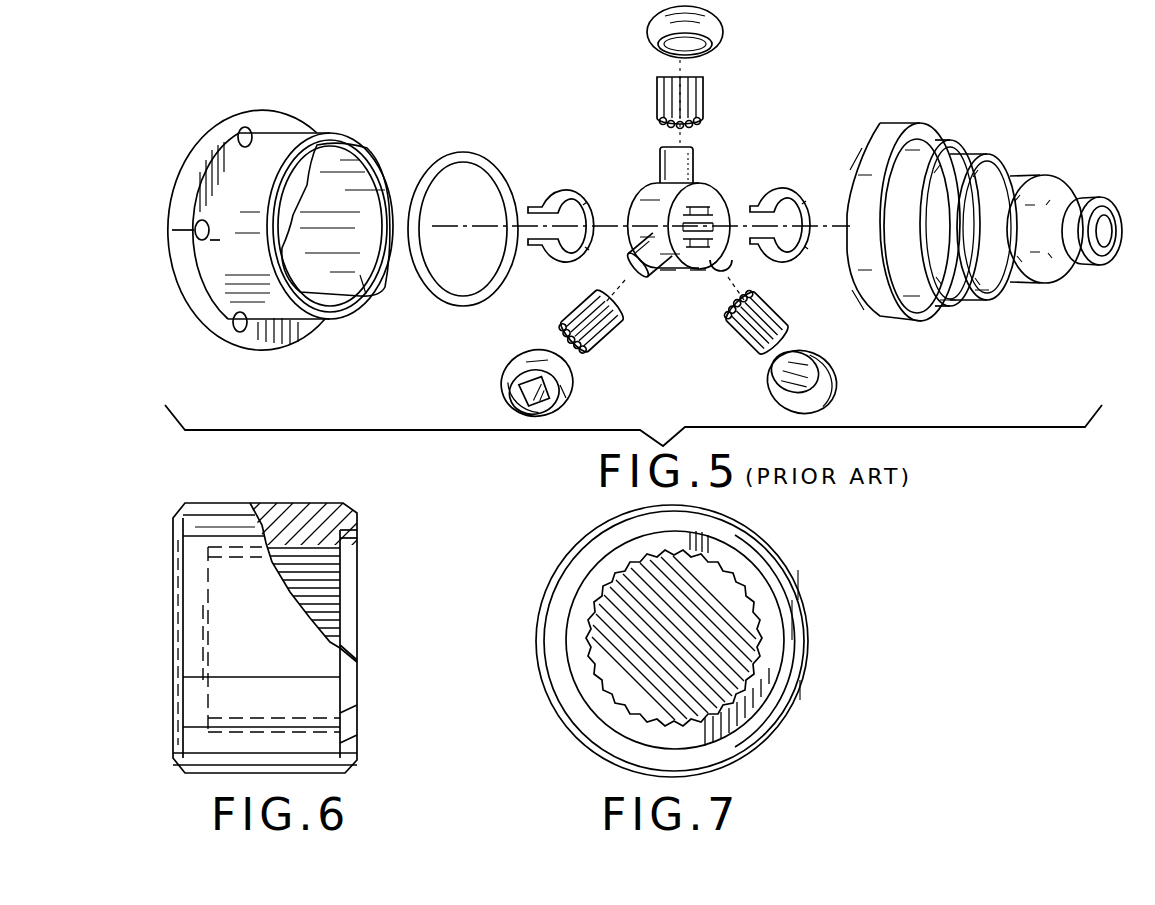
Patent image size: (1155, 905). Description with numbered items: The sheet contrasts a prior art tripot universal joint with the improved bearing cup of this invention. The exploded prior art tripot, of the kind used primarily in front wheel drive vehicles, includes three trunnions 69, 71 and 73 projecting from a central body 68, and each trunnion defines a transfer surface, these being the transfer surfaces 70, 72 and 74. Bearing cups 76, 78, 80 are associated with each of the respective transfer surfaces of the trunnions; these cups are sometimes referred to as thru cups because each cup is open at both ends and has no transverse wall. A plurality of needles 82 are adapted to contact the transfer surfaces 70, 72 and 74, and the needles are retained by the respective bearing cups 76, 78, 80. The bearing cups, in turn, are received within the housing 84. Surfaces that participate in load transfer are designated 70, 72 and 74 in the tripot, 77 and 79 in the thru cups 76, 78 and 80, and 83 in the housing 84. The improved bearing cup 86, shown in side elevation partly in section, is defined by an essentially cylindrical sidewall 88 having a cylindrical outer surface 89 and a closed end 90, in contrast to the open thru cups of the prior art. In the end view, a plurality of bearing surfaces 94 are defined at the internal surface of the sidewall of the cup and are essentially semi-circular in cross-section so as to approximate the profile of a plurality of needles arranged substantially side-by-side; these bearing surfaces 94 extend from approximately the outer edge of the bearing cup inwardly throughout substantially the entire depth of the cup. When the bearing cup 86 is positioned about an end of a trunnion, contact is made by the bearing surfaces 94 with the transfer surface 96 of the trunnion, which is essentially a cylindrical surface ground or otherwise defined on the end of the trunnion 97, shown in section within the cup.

In FIG. 5, the cross body 68 is at (647, 193).
In FIG. 5, the trunnion 69 is at (656, 156).
In FIG. 5, the transfer surface 70 is at (696, 160).
In FIG. 5, the trunnion 71 is at (705, 280).
In FIG. 5, the transfer surface 72 is at (732, 268).
In FIG. 5, the trunnion 73 is at (660, 280).
In FIG. 5, the transfer surface 74 is at (642, 258).
In FIG. 5, the bearing cup 76 is at (712, 34).
In FIG. 5, the surface 77 is at (522, 394).
In FIG. 5, the bearing cup 78 is at (824, 366).
In FIG. 5, the surface 79 is at (518, 362).
In FIG. 5, the bearing cup 80 is at (566, 397).
In FIG. 5, the needles 82 is at (706, 100).
In FIG. 5, the surface 83 is at (360, 306).
In FIG. 5, the housing 84 is at (233, 252).
In FIG. 6, the bearing cup 86 is at (207, 496).
In FIG. 7, the bearing cup 86 is at (812, 676).
In FIG. 6, the sidewall 88 is at (208, 528).
In FIG. 6, the cylindrical outer surface 89 is at (270, 503).
In FIG. 6, the closed end 90 is at (178, 576).
In FIG. 6, the bearing surfaces 94 is at (325, 570).
In FIG. 7, the bearing surfaces 94 is at (738, 576).
In FIG. 7, the transfer surface 96 is at (760, 640).
In FIG. 7, the trunnion 97 is at (724, 682).